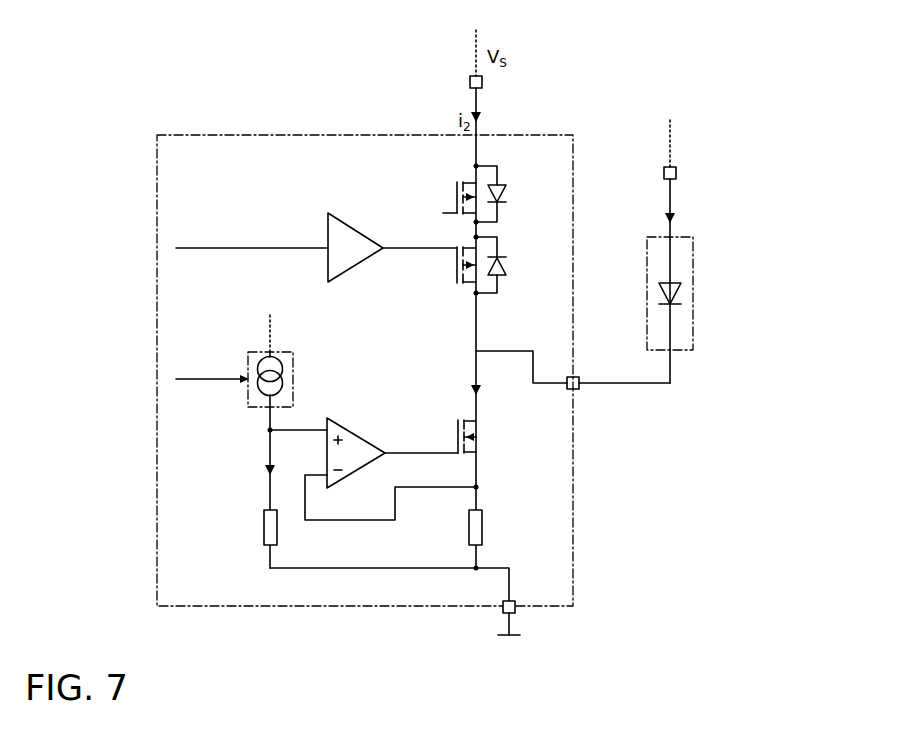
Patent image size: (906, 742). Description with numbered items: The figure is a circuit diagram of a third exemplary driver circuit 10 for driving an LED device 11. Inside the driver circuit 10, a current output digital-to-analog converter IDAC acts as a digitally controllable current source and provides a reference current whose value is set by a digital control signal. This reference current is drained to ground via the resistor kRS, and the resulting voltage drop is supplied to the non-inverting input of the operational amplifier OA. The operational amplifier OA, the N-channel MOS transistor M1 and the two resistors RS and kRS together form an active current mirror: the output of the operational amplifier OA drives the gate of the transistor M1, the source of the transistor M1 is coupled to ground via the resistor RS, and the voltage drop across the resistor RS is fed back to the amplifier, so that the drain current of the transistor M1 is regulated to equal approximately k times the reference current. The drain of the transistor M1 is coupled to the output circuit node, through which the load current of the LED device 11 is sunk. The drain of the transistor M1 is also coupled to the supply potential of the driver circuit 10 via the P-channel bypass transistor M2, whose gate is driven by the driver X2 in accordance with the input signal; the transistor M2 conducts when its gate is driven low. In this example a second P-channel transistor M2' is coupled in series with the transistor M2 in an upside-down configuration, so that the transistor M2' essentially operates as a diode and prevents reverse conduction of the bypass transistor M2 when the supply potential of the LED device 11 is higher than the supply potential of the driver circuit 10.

The driver circuit 10 is at (388, 385).
The LED device 11 is at (702, 251).
The MOS transistor M1 is at (484, 443).
The P-channel bypass transistor M2 is at (444, 271).
The second P-channel transistor M2' is at (467, 191).
The driver X2 is at (297, 254).
The operational amplifier OA is at (362, 453).
The current output digital-to-analog converter IDAC is at (261, 361).
The second resistor RS is at (488, 527).
The resistor RS' kRS is at (245, 527).